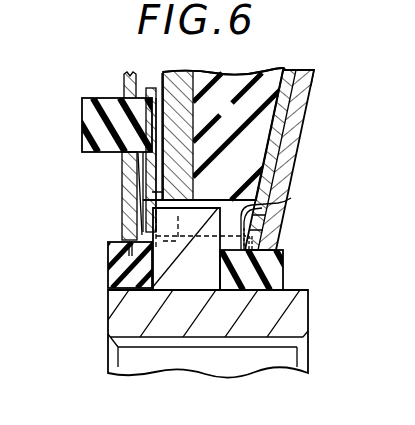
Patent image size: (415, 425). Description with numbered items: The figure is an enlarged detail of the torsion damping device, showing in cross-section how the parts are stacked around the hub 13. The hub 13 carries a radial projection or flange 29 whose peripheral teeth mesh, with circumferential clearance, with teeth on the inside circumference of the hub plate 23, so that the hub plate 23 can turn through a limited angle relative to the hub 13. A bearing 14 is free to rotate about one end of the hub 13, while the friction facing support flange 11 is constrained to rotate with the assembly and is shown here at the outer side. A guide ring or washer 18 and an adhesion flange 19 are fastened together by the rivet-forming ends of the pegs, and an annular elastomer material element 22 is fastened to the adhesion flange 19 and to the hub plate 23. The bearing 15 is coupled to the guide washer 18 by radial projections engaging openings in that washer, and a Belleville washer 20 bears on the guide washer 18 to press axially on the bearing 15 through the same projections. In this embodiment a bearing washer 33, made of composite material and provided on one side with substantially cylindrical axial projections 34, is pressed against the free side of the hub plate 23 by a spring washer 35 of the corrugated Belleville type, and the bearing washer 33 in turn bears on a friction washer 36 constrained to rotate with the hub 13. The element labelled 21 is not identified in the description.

The friction facing support flange 11 is at (123, 86).
The hub 13 is at (309, 326).
The bearing 14 is at (112, 276).
The bearing 15 is at (285, 279).
The guide ring or washer 18 is at (318, 73).
The adhesion flange 19 is at (297, 70).
The Belleville washer 20 is at (263, 233).
The clamping hook 21 is at (277, 221).
The annular elastomer material element 22 is at (247, 74).
The hub plate 23 is at (188, 70).
The radial projection or flange 29 is at (174, 270).
The bearing washer 33 is at (152, 88).
The cylindrical axial projections 34 is at (85, 124).
The spring washer 35 is at (135, 177).
The friction washer 36 is at (158, 129).